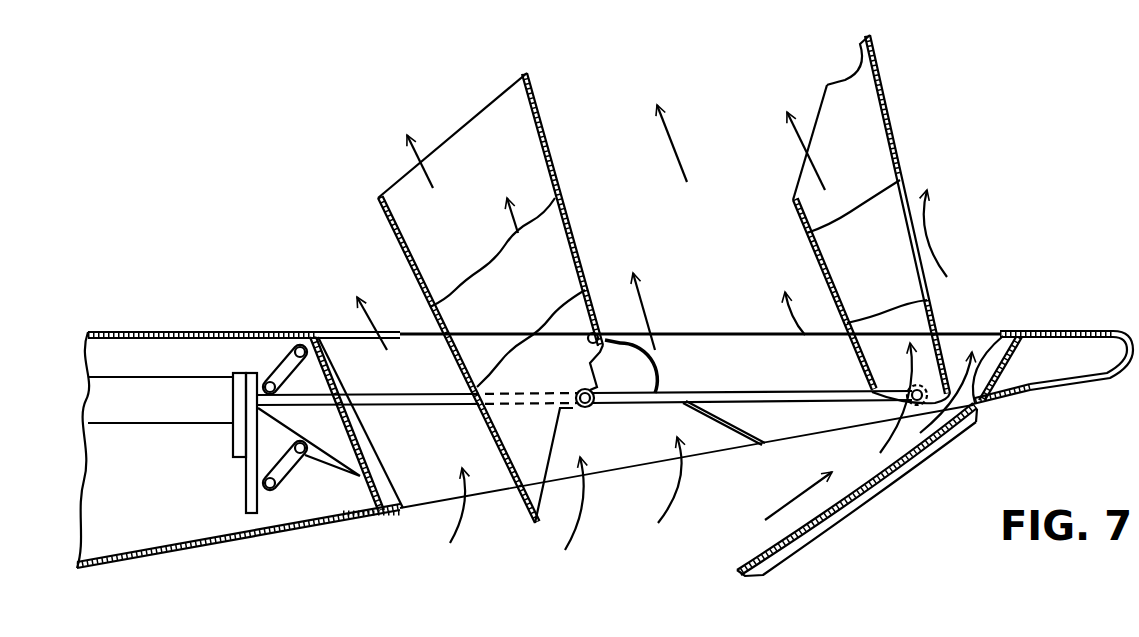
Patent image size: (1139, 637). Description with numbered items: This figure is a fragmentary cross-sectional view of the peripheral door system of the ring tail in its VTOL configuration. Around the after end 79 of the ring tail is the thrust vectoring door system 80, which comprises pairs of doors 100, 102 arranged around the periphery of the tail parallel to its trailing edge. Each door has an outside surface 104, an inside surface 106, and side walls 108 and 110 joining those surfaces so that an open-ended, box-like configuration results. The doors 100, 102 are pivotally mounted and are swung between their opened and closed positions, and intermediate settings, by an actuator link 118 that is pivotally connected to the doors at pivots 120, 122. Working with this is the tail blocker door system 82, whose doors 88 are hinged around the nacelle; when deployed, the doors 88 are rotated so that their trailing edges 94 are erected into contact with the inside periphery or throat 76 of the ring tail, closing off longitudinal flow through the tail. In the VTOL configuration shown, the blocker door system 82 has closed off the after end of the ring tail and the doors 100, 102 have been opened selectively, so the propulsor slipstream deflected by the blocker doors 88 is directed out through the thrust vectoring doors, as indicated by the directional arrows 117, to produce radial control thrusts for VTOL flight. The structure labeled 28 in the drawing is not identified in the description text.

The duct 28 is at (187, 328).
The throat 76 is at (1013, 398).
The after end 79 is at (1037, 331).
The thrust vectoring door system 80 is at (877, 219).
The tail blocker door system 82 is at (839, 528).
The doors 88 is at (886, 466).
The trailing edges 94 is at (983, 405).
The door 100 is at (506, 298).
The door 102 is at (887, 62).
The outside surface 104 is at (552, 156).
The inside surface 106 is at (406, 266).
The side wall 108 is at (477, 115).
The side wall 110 is at (557, 233).
The directional arrows 117 is at (687, 160).
The actuator link 118 is at (705, 392).
The pivot 120 is at (590, 405).
The pivot 122 is at (908, 400).